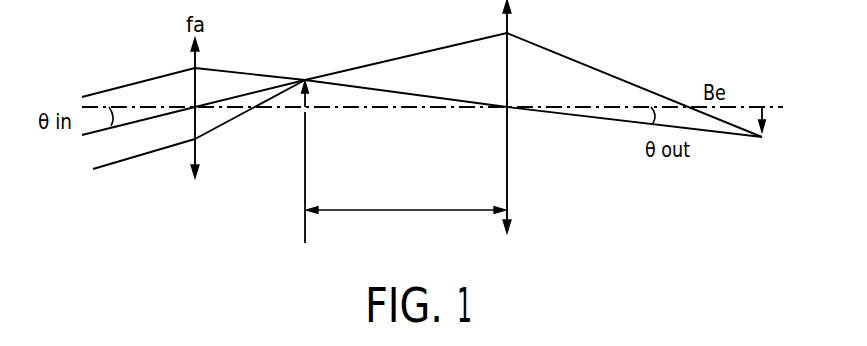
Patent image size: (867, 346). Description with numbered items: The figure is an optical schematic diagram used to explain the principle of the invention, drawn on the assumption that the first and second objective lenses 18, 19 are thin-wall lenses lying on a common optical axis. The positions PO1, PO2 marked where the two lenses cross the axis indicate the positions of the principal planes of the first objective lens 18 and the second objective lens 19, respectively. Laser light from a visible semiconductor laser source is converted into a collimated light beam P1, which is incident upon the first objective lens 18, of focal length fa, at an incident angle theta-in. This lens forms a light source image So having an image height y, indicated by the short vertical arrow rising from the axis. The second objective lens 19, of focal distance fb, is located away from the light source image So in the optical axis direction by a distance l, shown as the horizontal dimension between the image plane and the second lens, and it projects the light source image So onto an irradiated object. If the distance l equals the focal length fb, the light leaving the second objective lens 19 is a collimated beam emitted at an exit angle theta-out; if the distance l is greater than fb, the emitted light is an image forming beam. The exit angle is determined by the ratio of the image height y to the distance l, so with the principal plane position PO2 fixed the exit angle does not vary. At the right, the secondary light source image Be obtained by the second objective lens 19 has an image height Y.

The first objective lens 18 is at (194, 133).
The second objective lens 19 is at (509, 188).
The collimated light beam P1 is at (138, 73).
The principal plane position of the first objective lens PO1 is at (195, 108).
The principal plane position of the second objective lens PO2 is at (507, 108).
The image height y is at (306, 76).
The image height of secondary light source image Y is at (763, 106).
The light source image So is at (323, 177).
The distance l is at (406, 195).